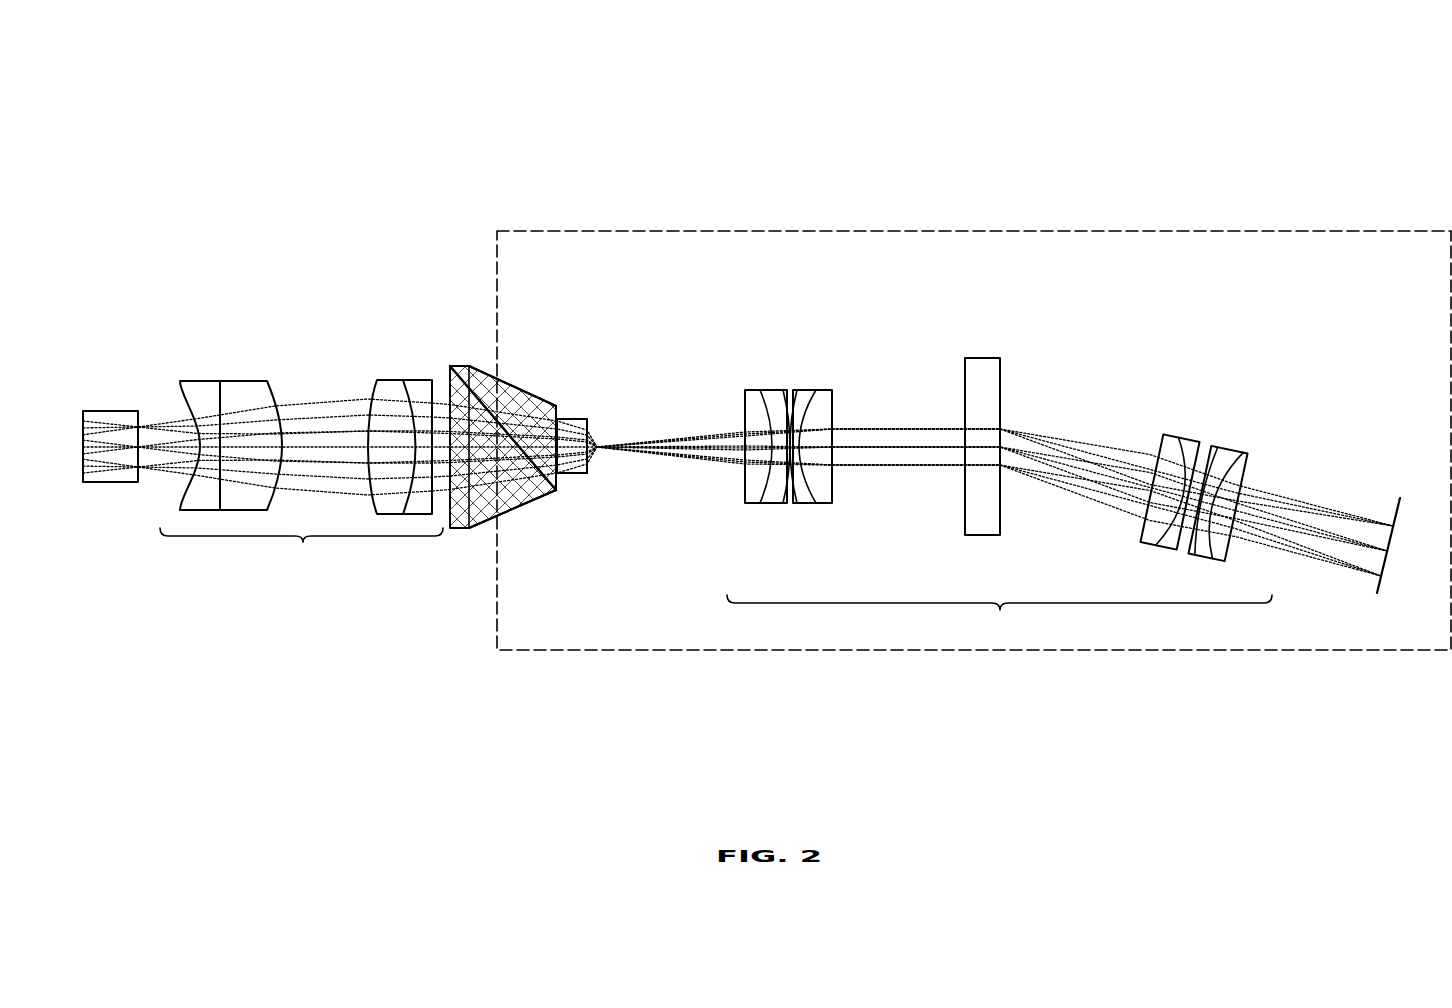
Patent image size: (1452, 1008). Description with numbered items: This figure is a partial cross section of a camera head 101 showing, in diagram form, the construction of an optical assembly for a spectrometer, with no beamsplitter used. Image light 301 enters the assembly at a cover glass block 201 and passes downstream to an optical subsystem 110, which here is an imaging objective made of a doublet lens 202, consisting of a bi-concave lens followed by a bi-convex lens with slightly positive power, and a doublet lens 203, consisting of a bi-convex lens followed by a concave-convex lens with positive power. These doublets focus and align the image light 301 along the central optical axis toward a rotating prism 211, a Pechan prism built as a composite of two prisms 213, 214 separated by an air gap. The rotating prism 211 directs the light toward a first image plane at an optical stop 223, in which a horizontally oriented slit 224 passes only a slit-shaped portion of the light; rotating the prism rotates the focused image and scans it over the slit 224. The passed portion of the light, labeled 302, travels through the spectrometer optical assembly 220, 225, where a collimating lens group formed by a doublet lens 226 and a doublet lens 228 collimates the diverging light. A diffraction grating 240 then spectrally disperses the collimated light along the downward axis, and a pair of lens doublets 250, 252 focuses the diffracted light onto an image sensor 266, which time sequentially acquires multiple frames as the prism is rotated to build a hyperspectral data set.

The camera head 101 is at (313, 120).
The optical subsystem 110 is at (301, 548).
The cover glass block 201 is at (111, 411).
The doublet lens 202 is at (213, 381).
The doublet lens 203 is at (403, 380).
The rotating prism 211 is at (480, 342).
The prism 213 is at (510, 385).
The prism 214 is at (512, 509).
The spectrometer optical assembly 220 is at (932, 222).
The optical stop 223 is at (588, 418).
The slit 224 is at (590, 445).
The spectrometer optical assembly 225 is at (999, 616).
The doublet lens 226 is at (753, 382).
The doublet lens 228 is at (820, 382).
The diffraction grating 240 is at (1001, 365).
The lens doublet 250 is at (1175, 428).
The lens doublet 252 is at (1243, 447).
The image sensor 266 is at (1380, 590).
The image light 301 is at (290, 392).
The portion of image light 302 is at (697, 430).